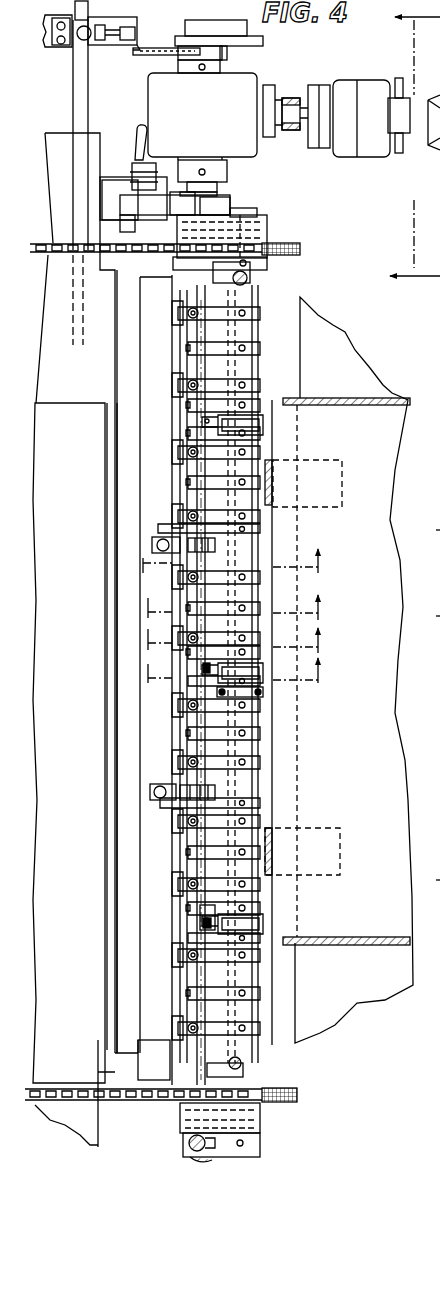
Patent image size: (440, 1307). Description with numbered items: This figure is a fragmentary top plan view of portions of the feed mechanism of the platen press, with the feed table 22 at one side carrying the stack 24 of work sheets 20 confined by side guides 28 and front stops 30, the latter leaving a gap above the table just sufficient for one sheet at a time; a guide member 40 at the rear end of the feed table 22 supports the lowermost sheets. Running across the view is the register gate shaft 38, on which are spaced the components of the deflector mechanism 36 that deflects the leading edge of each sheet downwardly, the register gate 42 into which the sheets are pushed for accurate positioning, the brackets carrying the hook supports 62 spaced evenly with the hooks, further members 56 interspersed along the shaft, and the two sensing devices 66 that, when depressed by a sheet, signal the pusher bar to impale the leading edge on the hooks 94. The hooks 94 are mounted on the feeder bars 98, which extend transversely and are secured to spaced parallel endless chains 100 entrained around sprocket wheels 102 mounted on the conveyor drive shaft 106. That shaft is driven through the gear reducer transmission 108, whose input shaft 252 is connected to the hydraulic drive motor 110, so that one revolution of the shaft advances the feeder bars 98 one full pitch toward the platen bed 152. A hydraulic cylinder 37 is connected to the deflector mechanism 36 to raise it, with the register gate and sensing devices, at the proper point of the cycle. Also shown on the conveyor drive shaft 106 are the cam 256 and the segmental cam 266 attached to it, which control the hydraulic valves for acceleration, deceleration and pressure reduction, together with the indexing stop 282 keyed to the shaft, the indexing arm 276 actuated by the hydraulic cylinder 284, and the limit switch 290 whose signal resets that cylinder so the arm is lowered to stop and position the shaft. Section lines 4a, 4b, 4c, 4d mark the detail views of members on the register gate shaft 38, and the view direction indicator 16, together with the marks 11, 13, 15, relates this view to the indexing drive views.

The section line 4a is at (232, 562).
The section line 4b is at (232, 608).
The section line 4c is at (229, 641).
The section line 4d is at (230, 671).
The partial element 11 is at (434, 522).
The partial element 13 is at (434, 872).
The partial element 15 is at (433, 608).
The viewing direction arrow 16 is at (415, 150).
The work sheets 20 is at (58, 405).
The feed table 22 is at (333, 338).
The stack 24 is at (380, 748).
The side guides 28 is at (327, 399).
The front stops 30 is at (273, 480).
The deflector mechanism 36 is at (200, 682).
The hydraulic cylinder 37 is at (188, 1145).
The register gate shaft 38 is at (225, 758).
The guide member 40 is at (340, 490).
The register gate 42 is at (222, 346).
The guide bracket 56 is at (272, 422).
The hook support 62 is at (193, 381).
The sensing devices 66 is at (160, 541).
The hooks 94 is at (186, 310).
The feeder bars 98 is at (141, 443).
The endless chains 100 is at (52, 242).
The sprocket wheels 102 is at (290, 244).
The conveyor drive shaft 106 is at (222, 183).
The gear reducer transmission 108 is at (217, 123).
The hydraulic drive motor 110 is at (370, 85).
The platen bed 152 is at (80, 985).
The input shaft 252 is at (287, 108).
The cam 256 is at (150, 46).
The cam 266 is at (150, 56).
The indexing arm 276 is at (175, 215).
The indexing stop 282 is at (238, 204).
The hydraulic cylinder 284 is at (132, 170).
The limit switch 290 is at (83, 38).